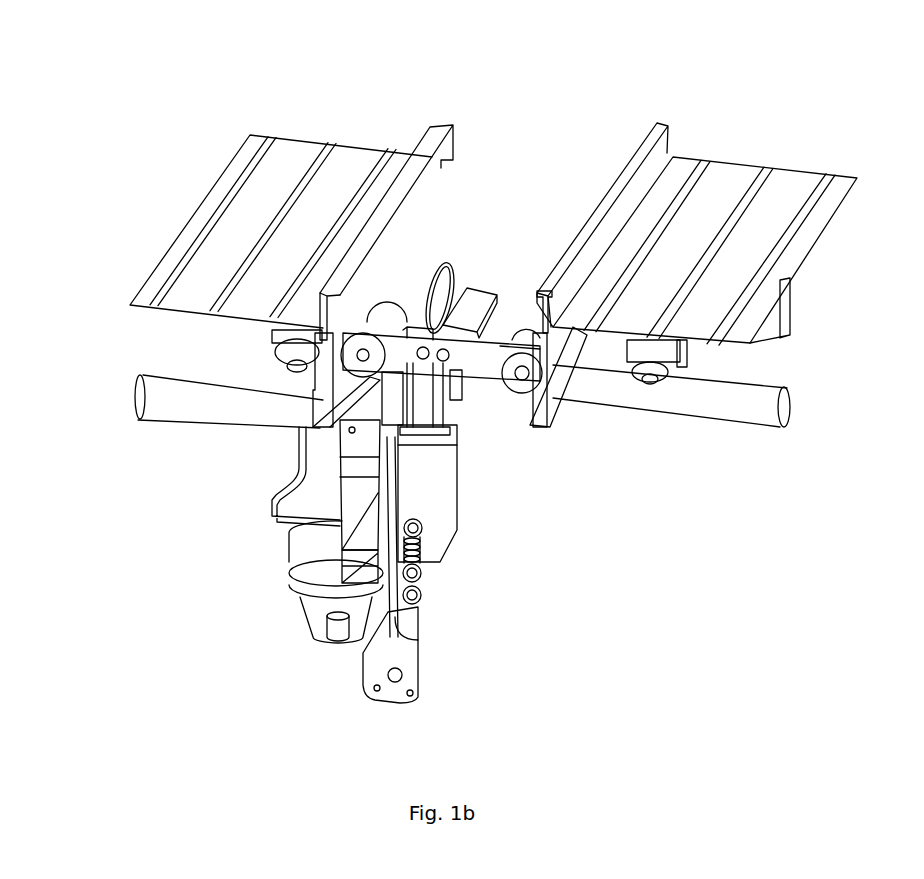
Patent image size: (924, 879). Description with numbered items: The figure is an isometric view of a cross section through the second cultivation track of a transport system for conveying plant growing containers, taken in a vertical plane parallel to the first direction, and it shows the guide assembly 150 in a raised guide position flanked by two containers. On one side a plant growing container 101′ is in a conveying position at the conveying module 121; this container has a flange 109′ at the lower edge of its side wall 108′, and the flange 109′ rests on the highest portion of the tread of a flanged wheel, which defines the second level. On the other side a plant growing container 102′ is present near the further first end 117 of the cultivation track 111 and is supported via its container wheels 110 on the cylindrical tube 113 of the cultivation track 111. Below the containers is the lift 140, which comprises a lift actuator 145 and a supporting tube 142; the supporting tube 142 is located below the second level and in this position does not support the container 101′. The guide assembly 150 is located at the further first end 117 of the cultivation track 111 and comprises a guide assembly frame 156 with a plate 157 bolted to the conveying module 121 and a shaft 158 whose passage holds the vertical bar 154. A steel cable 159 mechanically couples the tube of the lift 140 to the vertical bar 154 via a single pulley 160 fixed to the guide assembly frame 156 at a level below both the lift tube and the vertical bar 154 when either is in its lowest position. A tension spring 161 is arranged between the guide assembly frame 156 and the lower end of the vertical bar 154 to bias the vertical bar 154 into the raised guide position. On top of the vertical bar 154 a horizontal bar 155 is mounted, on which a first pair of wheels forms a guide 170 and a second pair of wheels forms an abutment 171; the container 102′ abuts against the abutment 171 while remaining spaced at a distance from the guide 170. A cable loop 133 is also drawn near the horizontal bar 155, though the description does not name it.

The plant growing container 101′ is at (195, 208).
The plant growing container 102′ is at (800, 258).
The side wall 108′ is at (322, 394).
The flange 109′ is at (320, 415).
The container wheels 110 is at (660, 384).
The cultivation track 111 is at (808, 408).
The cylindrical tube 113 is at (740, 426).
The further first end 117 is at (515, 292).
The conveying module 121 is at (483, 293).
The cable loop 133 is at (449, 262).
The lift 140 is at (198, 543).
The supporting tube 142 is at (177, 422).
The lift actuator 145 is at (292, 585).
The guide assembly 150 is at (456, 388).
The vertical bar 154 is at (447, 410).
The horizontal bar 155 is at (508, 334).
The guide assembly frame 156 is at (477, 515).
The plate 157 is at (383, 607).
The shaft 158 is at (455, 552).
The steel cable 159 is at (378, 560).
The pulley 160 is at (388, 700).
The tension spring 161 is at (427, 560).
The guide 170 is at (388, 332).
The abutment 171 is at (532, 356).